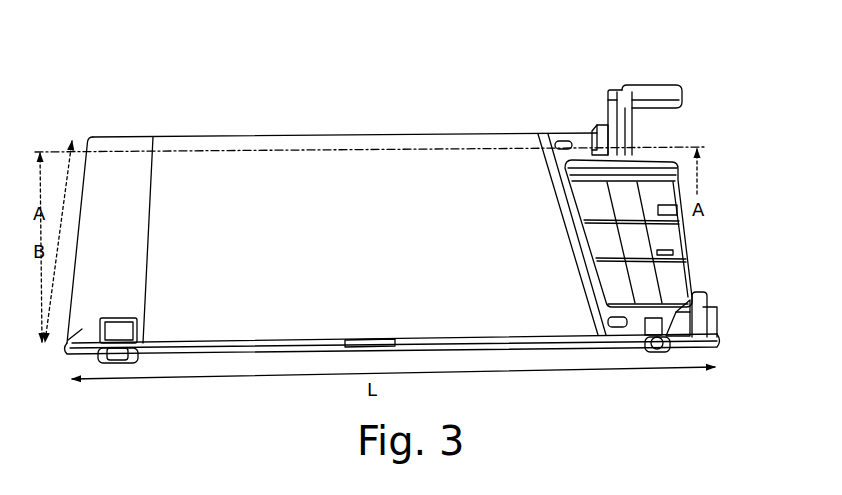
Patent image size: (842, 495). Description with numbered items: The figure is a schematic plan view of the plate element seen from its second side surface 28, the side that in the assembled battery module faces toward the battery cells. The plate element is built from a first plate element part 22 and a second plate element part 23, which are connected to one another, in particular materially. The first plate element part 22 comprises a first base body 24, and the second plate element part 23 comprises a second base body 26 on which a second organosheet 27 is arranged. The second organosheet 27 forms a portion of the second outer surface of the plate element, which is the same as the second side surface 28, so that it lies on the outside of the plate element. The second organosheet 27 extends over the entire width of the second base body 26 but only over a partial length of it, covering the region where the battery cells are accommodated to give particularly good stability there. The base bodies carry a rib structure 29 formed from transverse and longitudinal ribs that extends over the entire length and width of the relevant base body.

The first plate element part 22 is at (690, 239).
The second plate element part 23 is at (708, 341).
The first base body 24 is at (687, 275).
The second base body 26 is at (66, 346).
The second organosheet 27 is at (342, 180).
The second side surface 28 is at (553, 150).
The rib structure 29 is at (682, 252).